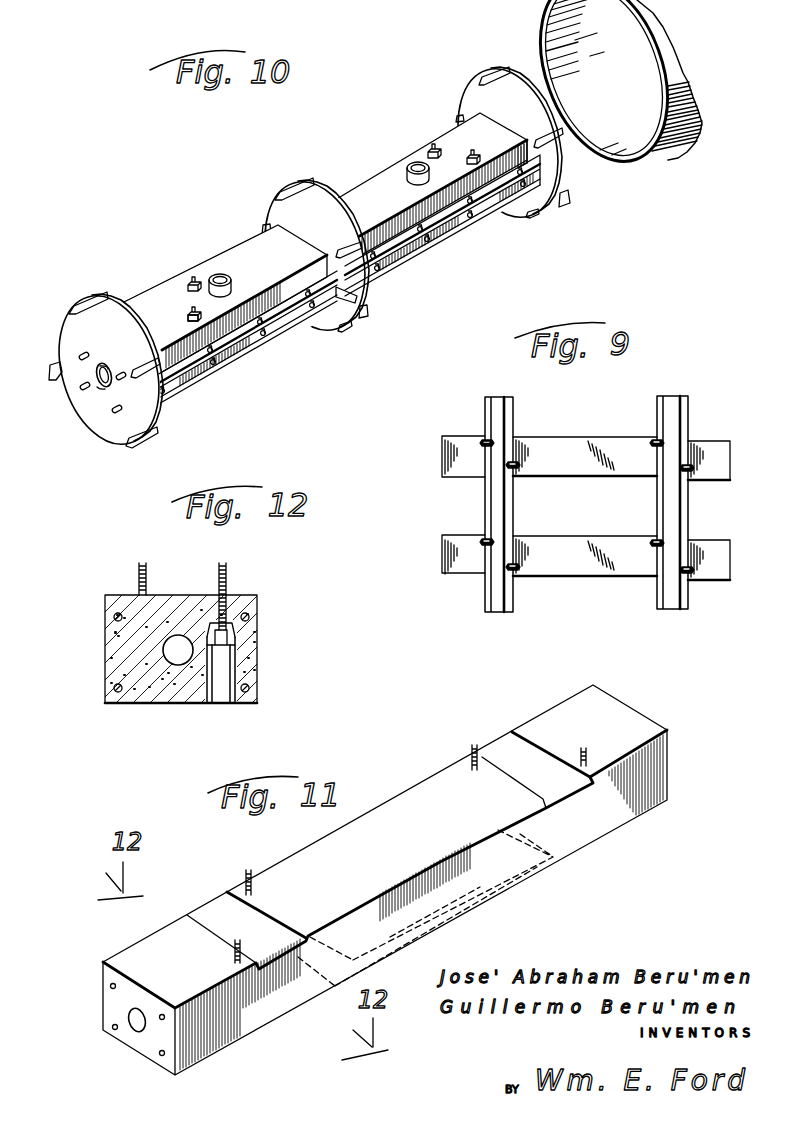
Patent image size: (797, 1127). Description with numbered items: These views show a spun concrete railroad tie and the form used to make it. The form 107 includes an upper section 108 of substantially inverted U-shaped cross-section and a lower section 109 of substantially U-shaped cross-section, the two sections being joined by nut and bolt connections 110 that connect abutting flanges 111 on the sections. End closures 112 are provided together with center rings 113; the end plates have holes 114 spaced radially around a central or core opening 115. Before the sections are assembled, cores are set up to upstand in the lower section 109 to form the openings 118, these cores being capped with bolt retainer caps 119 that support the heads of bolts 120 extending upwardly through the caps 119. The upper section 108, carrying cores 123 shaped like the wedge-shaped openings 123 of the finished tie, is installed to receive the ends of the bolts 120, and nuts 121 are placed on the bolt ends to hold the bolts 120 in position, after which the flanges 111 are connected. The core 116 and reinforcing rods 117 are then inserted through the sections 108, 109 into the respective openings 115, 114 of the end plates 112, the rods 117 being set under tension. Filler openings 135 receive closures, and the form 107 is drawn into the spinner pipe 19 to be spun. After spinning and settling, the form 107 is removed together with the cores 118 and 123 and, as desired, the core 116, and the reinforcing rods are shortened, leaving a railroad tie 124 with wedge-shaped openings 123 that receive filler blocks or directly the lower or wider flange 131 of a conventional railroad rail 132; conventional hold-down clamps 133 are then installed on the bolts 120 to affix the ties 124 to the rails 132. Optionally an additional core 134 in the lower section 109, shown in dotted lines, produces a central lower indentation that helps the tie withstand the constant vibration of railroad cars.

In FIG. 10, the spinner pipe 19 is at (673, 142).
In FIG. 10, the form 107 is at (250, 231).
In FIG. 10, the upper section 108 is at (367, 193).
In FIG. 10, the lower section 109 is at (250, 346).
In FIG. 10, the nut and bolt connections 110 is at (427, 251).
In FIG. 10, the flanges 111 is at (457, 221).
In FIG. 10, the end closures 112 is at (462, 96).
In FIG. 10, the center rings 113 is at (268, 211).
In FIG. 10, the holes 114 is at (92, 389).
In FIG. 10, the central or core opening 115 is at (108, 392).
In FIG. 12, the central or core opening 115 is at (178, 636).
In FIG. 11, the central or core opening 115 is at (137, 1031).
In FIG. 10, the core 116 is at (97, 392).
In FIG. 10, the reinforcing rods 117 is at (80, 387).
In FIG. 12, the reinforcing rods 117 is at (114, 616).
In FIG. 11, the reinforcing rods 117 is at (112, 1025).
In FIG. 12, the openings 118 is at (222, 702).
In FIG. 12, the bolt retainer caps 119 is at (238, 643).
In FIG. 10, the bolts 120 is at (192, 306).
In FIG. 9, the bolts 120 is at (484, 446).
In FIG. 12, the bolts 120 is at (228, 588).
In FIG. 11, the bolts 120 is at (233, 957).
In FIG. 10, the nuts 121 is at (190, 320).
In FIG. 11, the cores / wedge-shaped openings 123 is at (217, 912).
In FIG. 9, the railroad tie 124 is at (577, 437).
In FIG. 11, the railroad tie 124 is at (376, 855).
In FIG. 9, the lower or wider flange 131 is at (486, 588).
In FIG. 9, the railroad rail 132 is at (495, 500).
In FIG. 9, the hold-down clamps 133 is at (484, 441).
In FIG. 11, the additional core 134 is at (507, 880).
In FIG. 10, the filler openings 135 is at (215, 272).